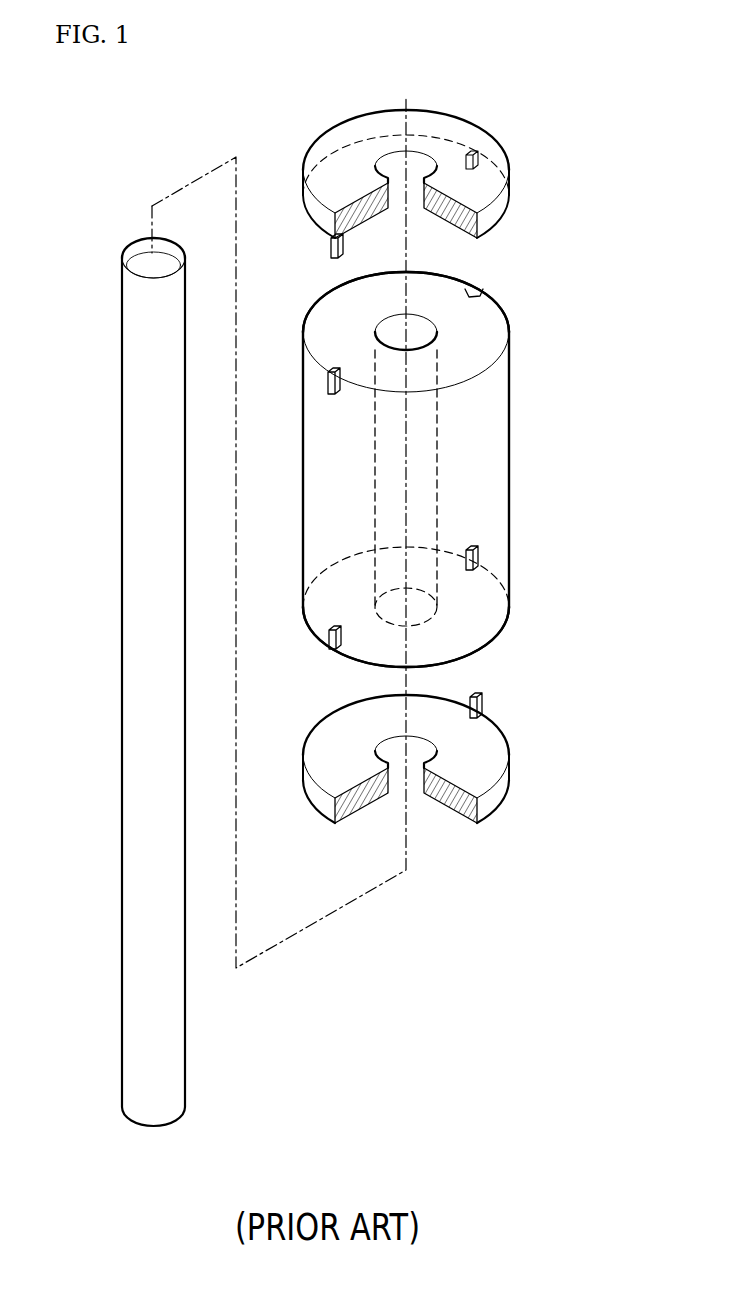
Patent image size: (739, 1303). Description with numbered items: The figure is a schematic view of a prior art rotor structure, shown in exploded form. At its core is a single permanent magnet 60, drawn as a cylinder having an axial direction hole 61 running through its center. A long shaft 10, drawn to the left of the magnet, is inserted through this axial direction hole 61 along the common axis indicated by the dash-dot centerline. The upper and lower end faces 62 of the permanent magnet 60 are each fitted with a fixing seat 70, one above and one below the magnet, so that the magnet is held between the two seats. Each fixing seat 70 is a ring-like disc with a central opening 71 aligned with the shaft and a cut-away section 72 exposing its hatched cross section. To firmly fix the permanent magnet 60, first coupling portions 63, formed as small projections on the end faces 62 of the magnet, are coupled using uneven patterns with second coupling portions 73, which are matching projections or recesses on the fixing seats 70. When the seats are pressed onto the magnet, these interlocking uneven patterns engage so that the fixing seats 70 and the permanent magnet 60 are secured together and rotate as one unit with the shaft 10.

The shaft 10 is at (140, 515).
The permanent magnet 60 is at (495, 460).
The axial direction hole 61 is at (433, 323).
The end face 62 is at (488, 327).
The first coupling portion 63 is at (328, 380).
The fixing seat 70 is at (490, 175).
The cap hole 71 is at (418, 163).
The cut slot 72 is at (458, 240).
The second coupling portion 73 is at (330, 250).